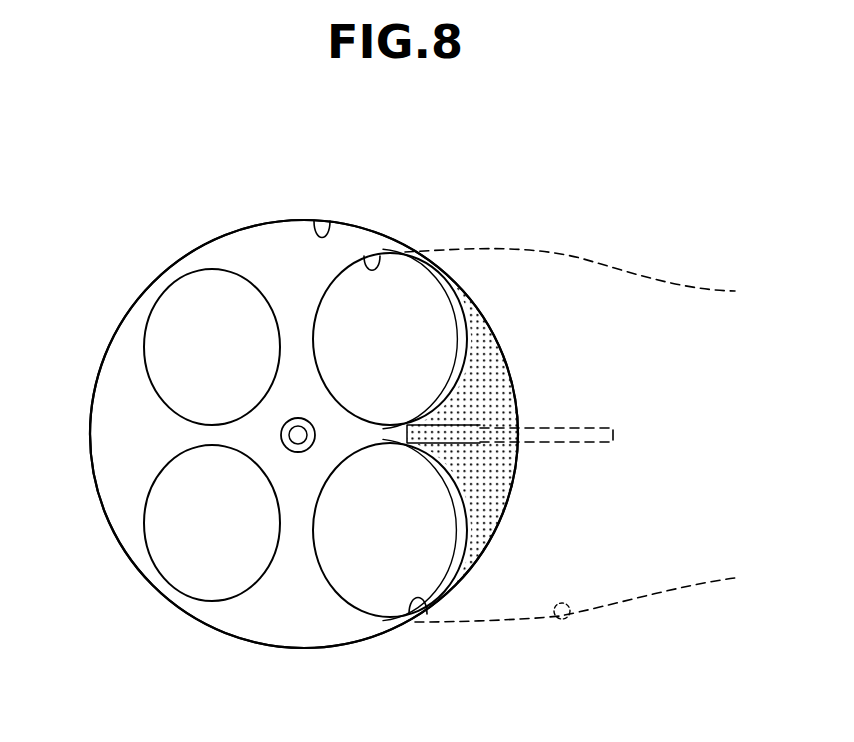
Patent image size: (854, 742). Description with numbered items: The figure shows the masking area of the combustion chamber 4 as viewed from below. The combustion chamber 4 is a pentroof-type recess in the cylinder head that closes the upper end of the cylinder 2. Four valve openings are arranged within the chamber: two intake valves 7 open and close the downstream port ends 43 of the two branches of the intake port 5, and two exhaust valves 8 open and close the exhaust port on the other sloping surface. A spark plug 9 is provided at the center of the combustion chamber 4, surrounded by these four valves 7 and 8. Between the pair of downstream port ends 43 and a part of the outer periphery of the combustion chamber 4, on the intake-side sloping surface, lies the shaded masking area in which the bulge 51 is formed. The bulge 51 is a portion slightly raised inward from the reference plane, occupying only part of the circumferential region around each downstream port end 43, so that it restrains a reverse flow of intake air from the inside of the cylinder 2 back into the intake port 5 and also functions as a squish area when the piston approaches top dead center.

The cylinder 2 is at (328, 222).
The combustion chamber 4 is at (262, 255).
The intake port 5 is at (571, 620).
The intake valve 7 is at (418, 282).
The exhaust valve 8 is at (198, 320).
The spark plug 9 is at (281, 436).
The downstream port end 43 is at (380, 268).
The bulge 51 is at (495, 475).